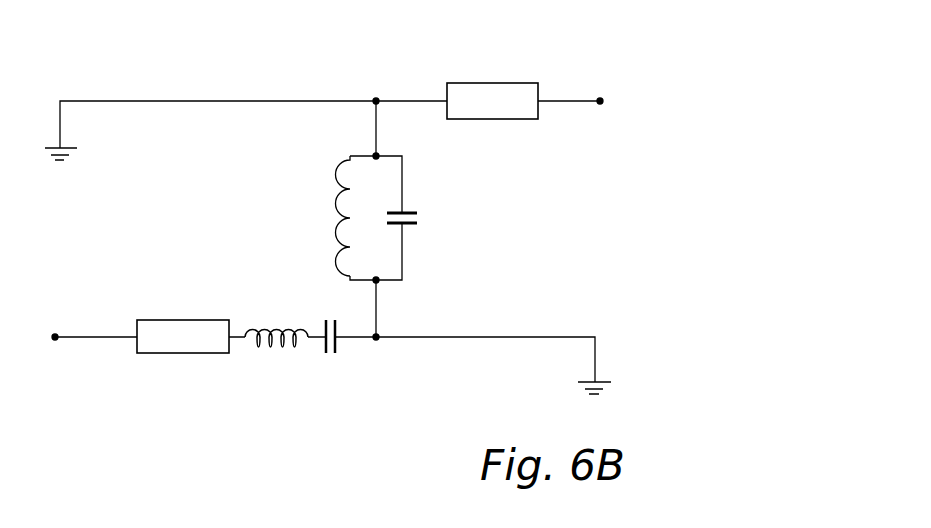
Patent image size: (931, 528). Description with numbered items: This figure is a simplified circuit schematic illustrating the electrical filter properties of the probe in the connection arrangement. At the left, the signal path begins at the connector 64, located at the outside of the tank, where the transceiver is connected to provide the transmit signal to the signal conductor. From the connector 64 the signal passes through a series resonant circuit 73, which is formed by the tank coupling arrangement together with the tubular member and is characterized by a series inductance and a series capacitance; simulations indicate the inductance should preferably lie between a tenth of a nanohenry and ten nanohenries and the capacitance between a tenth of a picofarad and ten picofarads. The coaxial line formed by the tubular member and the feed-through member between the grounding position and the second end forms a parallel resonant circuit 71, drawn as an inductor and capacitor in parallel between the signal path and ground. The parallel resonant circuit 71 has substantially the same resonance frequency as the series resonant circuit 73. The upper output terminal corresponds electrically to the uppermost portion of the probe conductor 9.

The probe conductor 9 is at (600, 100).
The parallel resonant circuit 71 is at (432, 218).
The series resonant circuit 73 is at (275, 298).
The connector 64 is at (56, 335).